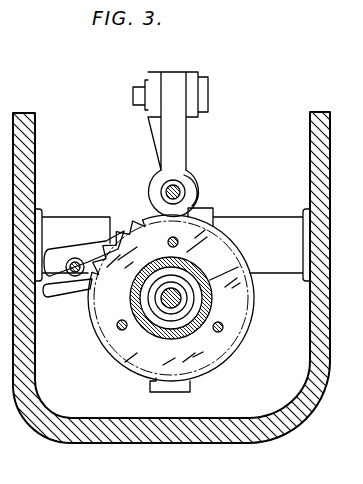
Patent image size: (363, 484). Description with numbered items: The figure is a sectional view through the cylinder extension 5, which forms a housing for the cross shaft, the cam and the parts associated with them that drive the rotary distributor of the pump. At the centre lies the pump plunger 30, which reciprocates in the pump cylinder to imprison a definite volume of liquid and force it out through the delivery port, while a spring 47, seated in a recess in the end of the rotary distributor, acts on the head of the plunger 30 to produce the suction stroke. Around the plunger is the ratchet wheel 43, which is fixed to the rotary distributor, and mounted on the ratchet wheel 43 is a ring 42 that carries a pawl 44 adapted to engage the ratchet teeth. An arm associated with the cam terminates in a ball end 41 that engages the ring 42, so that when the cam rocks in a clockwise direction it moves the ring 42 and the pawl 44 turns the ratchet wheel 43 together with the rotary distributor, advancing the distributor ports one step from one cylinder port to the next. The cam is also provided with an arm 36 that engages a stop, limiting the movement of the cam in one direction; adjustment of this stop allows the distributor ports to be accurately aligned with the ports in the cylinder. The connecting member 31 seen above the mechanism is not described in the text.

The cylinder extension 5 is at (248, 432).
The connecting rod 31 is at (172, 148).
The ring 42 is at (197, 203).
The pawl 44 is at (152, 200).
The spring 47 is at (187, 298).
The ratchet wheel 43 is at (120, 221).
The plunger 30 is at (160, 297).
The ball end 41 is at (72, 280).
The arm 36 is at (160, 396).